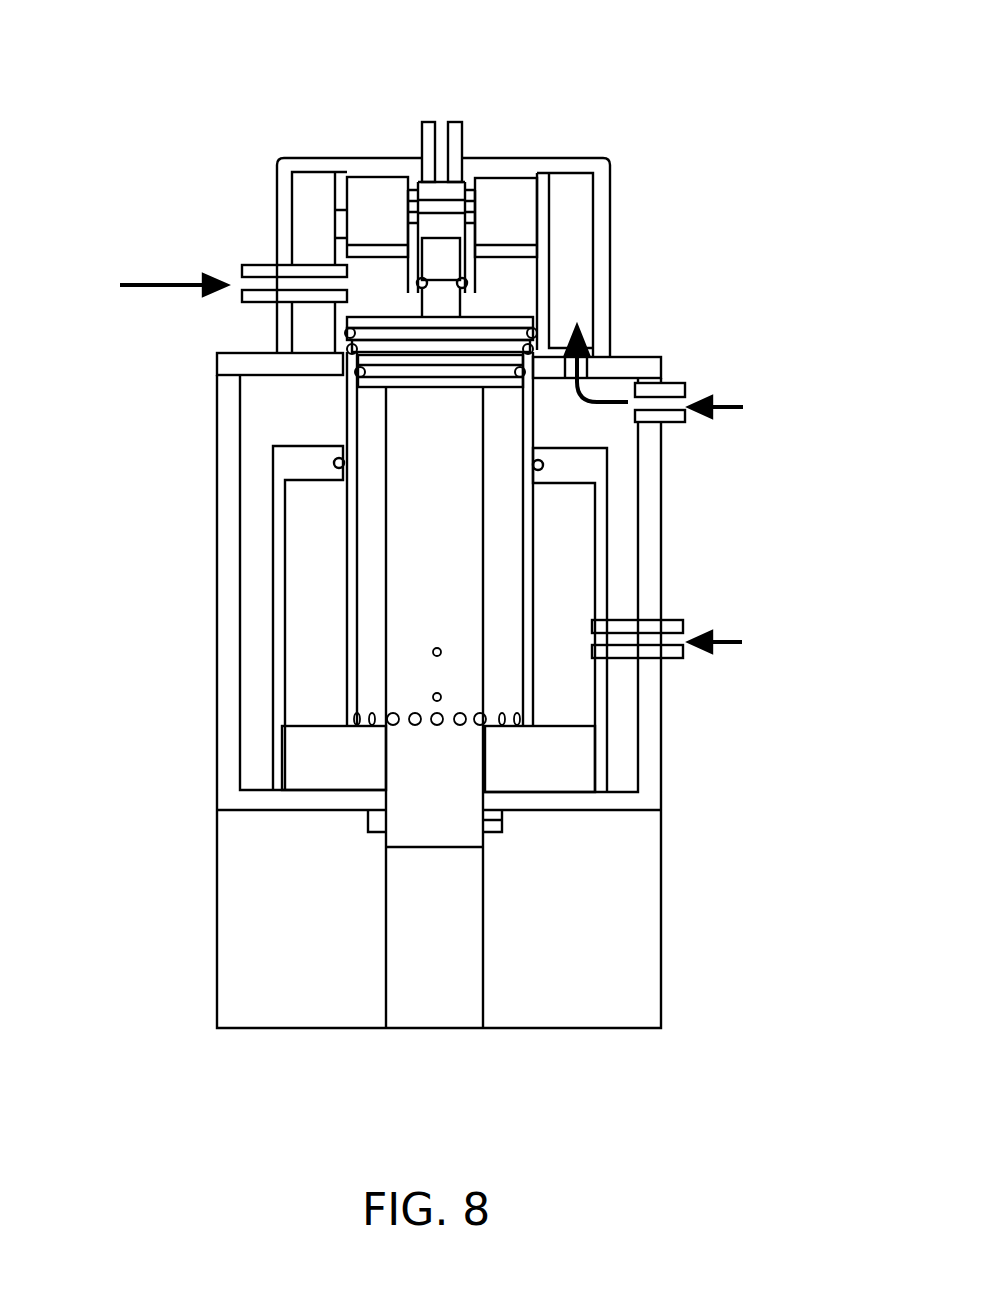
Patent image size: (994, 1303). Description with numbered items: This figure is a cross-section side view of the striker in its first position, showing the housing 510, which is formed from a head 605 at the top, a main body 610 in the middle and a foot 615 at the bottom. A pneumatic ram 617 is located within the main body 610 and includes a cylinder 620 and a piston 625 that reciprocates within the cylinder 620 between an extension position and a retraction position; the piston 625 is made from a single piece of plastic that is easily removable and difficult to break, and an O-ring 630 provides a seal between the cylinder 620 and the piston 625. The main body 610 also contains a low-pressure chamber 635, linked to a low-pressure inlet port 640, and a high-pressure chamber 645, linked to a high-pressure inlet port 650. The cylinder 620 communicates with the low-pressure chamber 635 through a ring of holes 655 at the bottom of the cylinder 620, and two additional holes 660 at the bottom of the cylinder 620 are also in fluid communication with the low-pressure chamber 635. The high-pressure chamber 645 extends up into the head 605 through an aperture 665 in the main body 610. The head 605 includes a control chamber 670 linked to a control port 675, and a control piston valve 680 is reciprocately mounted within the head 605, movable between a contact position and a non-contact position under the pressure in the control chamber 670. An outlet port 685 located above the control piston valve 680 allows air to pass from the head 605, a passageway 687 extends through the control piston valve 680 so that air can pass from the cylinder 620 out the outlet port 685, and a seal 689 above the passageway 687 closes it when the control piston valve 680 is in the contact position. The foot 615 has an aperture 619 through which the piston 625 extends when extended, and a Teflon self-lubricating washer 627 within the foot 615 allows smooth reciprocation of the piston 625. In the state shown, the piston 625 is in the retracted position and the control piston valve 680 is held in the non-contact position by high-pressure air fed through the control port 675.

The housing 510 is at (630, 131).
The head 605 is at (630, 179).
The main body 610 is at (675, 522).
The foot 615 is at (672, 948).
The pneumatic ram 617 is at (332, 365).
The aperture 619 is at (502, 822).
The cylinder 620 is at (352, 425).
The piston 625 is at (418, 520).
The Teflon self-lubricating washer 627 is at (375, 822).
The O-ring 630 is at (357, 375).
The low-pressure chamber 635 is at (578, 232).
The low-pressure inlet port 640 is at (673, 625).
The high-pressure chamber 645 is at (623, 452).
The high-pressure inlet port 650 is at (673, 390).
The ring of holes 655 is at (352, 720).
The additional holes 660 is at (433, 695).
The aperture 665 is at (583, 367).
The control chamber 670 is at (382, 277).
The control port 675 is at (258, 268).
The control piston valve 680 is at (508, 322).
The outlet port 685 is at (457, 133).
The passageway 687 is at (445, 260).
The seal 689 is at (430, 207).